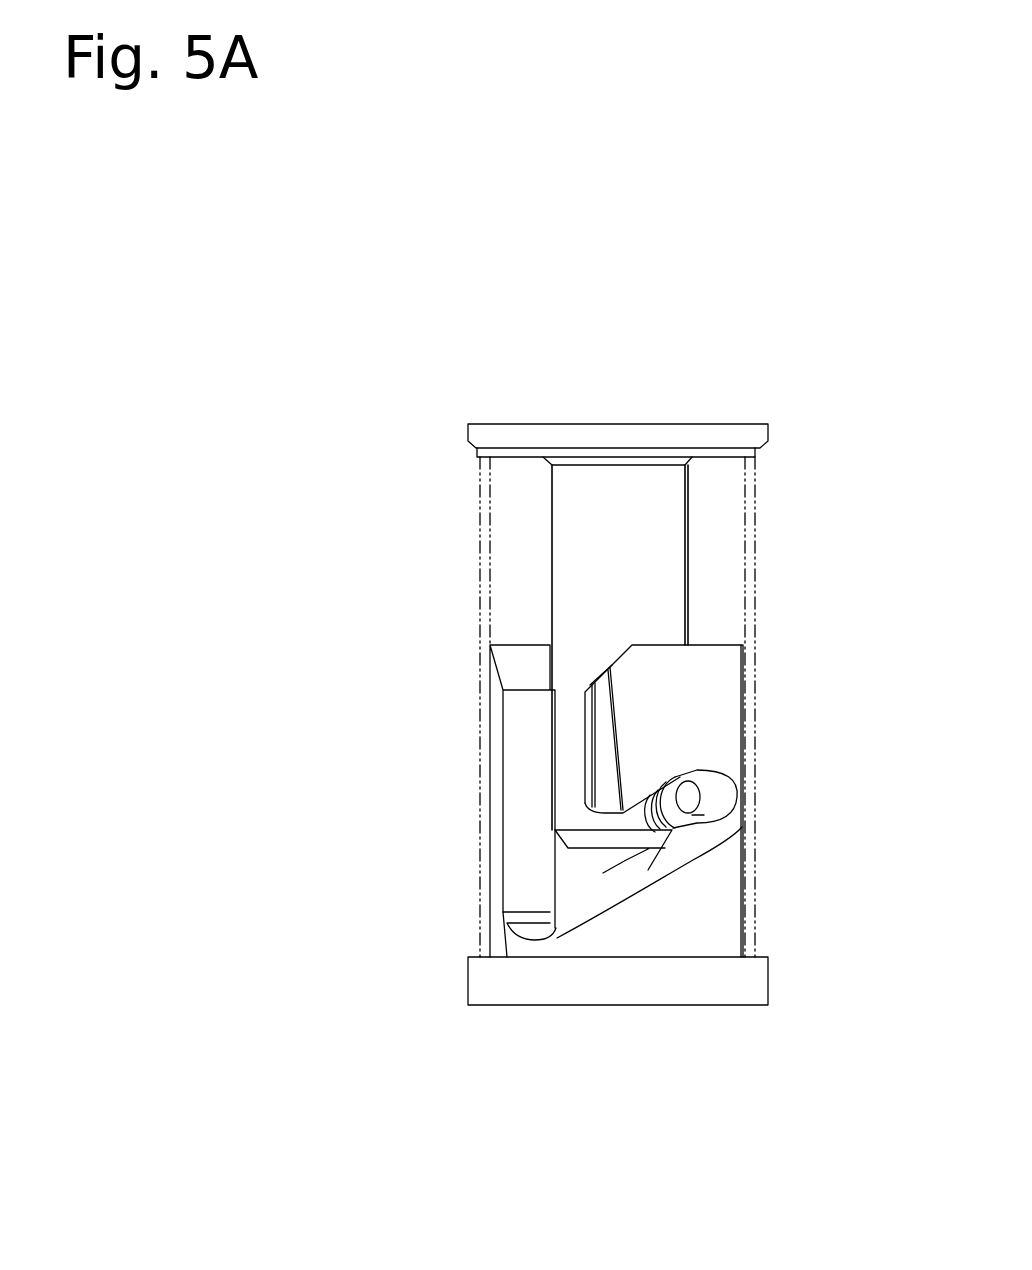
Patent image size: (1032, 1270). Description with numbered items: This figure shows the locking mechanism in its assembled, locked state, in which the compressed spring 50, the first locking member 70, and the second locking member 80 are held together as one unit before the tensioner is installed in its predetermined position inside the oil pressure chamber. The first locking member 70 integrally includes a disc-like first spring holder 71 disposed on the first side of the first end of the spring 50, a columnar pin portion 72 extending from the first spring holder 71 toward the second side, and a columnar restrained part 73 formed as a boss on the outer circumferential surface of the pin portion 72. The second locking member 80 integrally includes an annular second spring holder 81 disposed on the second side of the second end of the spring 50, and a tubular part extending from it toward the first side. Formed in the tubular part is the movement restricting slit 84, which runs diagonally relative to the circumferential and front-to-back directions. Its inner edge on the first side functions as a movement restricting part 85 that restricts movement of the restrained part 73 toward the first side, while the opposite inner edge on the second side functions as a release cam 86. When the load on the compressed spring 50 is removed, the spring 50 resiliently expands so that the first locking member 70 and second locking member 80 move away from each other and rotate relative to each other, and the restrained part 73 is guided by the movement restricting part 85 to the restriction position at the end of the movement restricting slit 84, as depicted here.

The spring 50 is at (488, 580).
The first locking member 70 is at (509, 533).
The first spring holder 71 is at (525, 432).
The pin portion 72 is at (597, 530).
The restrained part 73 is at (688, 807).
The second locking member 80 is at (574, 911).
The second spring holder 81 is at (562, 987).
The movement restricting slit 84 is at (634, 857).
The movement restricting part 85 is at (675, 775).
The release cam 86 is at (687, 875).